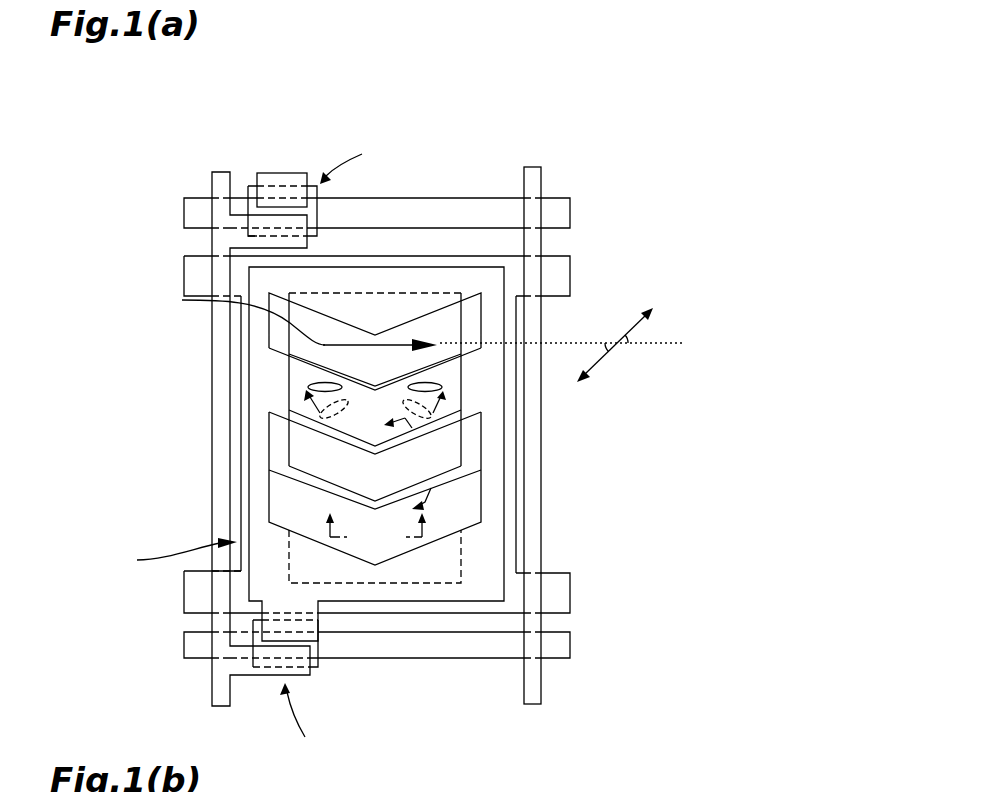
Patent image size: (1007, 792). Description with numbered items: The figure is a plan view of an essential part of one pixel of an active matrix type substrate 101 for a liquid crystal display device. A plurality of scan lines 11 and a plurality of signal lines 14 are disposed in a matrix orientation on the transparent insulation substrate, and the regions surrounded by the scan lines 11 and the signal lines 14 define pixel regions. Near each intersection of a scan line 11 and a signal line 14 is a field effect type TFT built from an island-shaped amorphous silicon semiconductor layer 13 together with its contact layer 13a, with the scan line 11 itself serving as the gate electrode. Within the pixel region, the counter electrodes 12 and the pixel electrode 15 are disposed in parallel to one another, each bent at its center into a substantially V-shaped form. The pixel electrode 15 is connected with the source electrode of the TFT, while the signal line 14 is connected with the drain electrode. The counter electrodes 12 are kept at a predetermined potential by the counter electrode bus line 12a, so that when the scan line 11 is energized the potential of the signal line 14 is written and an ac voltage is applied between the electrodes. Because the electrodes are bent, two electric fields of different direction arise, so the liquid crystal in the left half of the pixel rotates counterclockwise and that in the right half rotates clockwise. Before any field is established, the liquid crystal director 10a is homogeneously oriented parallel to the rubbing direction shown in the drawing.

The active matrix type substrate 101 is at (543, 165).
The scan line 11 is at (570, 214).
The signal line 14 is at (220, 684).
The counter electrode bus line 12a is at (578, 550).
The counter electrode 12 is at (300, 363).
The pixel electrode 15 is at (312, 426).
The semiconductor layer 13 is at (251, 186).
The contact layer 13a is at (283, 420).
The liquid crystal director 10a is at (442, 388).